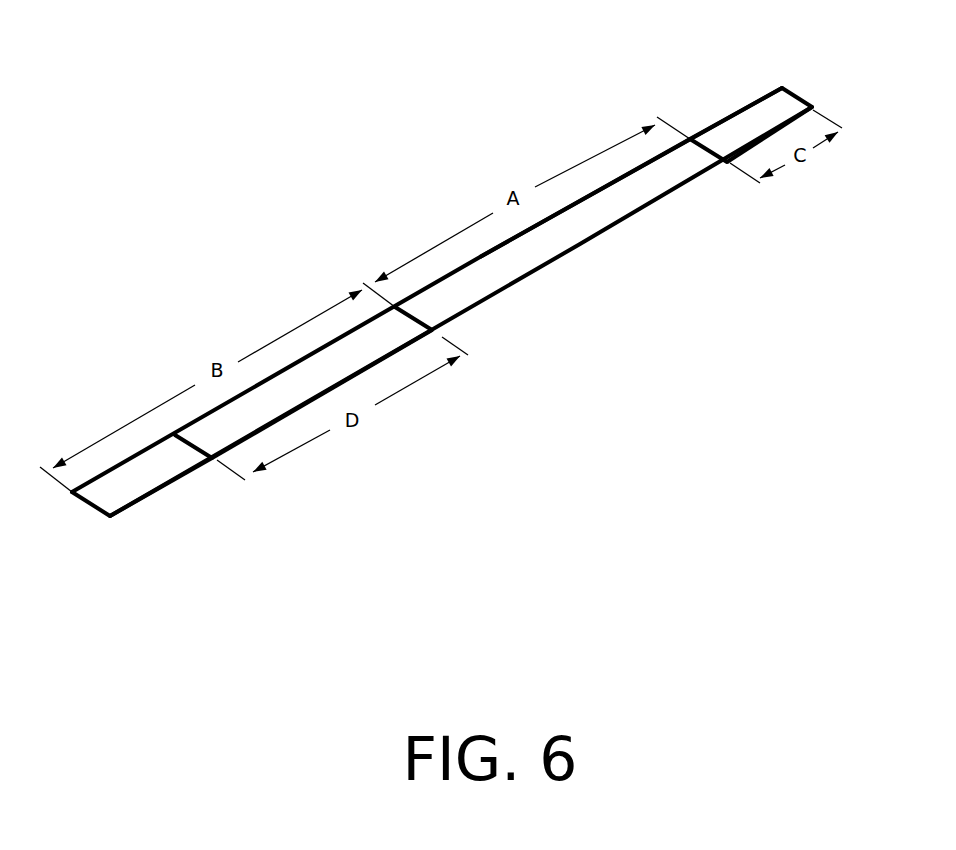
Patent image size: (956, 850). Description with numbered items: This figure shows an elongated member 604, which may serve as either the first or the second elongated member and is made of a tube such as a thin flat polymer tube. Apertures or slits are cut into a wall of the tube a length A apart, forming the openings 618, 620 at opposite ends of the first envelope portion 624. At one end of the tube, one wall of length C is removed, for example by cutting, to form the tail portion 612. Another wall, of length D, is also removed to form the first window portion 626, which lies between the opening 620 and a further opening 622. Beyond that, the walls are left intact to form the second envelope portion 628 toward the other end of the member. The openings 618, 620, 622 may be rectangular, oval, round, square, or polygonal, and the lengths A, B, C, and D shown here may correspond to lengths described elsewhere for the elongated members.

The elongated member 604 is at (347, 183).
The tail portion 612 is at (783, 108).
The opening 618 is at (710, 145).
The opening 620 is at (423, 324).
The opening 622 is at (192, 447).
The first envelope portion 624 is at (620, 202).
The first window portion 626 is at (330, 392).
The second envelope portion 628 is at (127, 487).